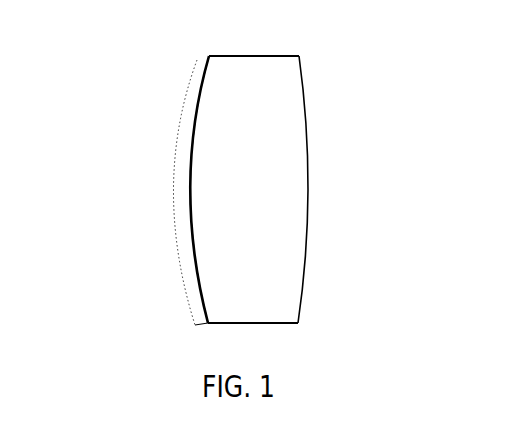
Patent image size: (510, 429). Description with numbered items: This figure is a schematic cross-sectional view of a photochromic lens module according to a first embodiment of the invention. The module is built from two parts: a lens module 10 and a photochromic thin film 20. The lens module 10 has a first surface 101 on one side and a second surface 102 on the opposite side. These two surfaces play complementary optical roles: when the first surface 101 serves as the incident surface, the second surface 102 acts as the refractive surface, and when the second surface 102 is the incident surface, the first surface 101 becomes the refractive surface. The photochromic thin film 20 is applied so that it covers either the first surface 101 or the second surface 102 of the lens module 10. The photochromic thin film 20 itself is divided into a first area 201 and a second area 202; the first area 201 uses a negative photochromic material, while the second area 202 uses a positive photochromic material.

The lens module 10 is at (282, 85).
The first surface 101 is at (200, 60).
The second surface 102 is at (308, 175).
The photochromic thin film 20 is at (178, 204).
The first area 201 is at (190, 166).
The second area 202 is at (195, 315).